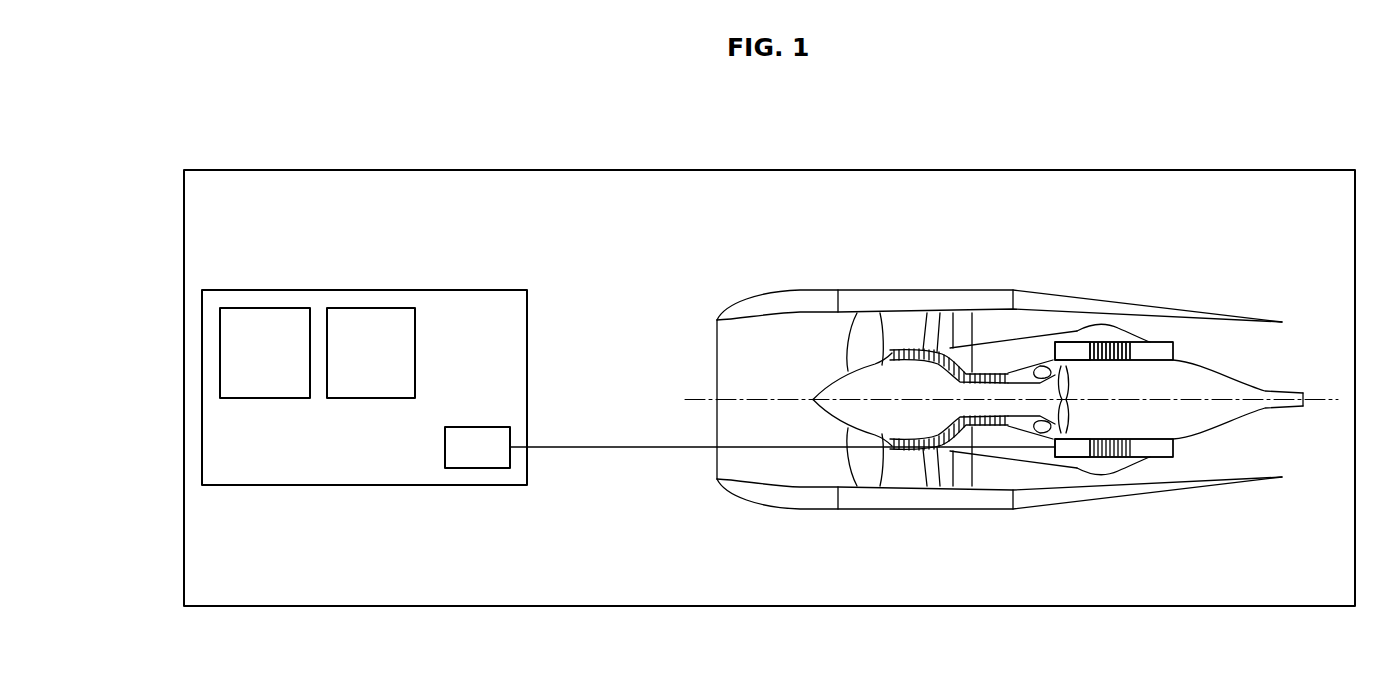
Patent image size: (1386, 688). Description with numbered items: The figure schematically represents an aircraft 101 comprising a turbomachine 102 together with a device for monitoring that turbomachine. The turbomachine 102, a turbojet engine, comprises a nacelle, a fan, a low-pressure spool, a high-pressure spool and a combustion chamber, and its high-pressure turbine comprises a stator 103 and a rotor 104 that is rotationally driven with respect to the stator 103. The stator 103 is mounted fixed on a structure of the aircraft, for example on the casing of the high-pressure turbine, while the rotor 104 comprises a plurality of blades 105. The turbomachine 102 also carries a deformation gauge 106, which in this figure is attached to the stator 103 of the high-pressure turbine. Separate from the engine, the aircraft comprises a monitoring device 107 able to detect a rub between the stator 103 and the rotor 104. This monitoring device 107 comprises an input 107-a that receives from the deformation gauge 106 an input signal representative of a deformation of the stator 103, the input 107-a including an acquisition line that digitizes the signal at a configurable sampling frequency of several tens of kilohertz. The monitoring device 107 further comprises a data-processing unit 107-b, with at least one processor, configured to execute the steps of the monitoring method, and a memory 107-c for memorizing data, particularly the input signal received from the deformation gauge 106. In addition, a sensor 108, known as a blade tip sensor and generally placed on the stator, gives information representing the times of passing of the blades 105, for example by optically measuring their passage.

The aircraft 101 is at (770, 170).
The turbomachine 102 is at (967, 545).
The stator 103 is at (1082, 341).
The rotor 104 is at (1097, 380).
The blades 105 is at (1082, 456).
The deformation gauge 106 is at (1067, 460).
The monitoring device 107 is at (363, 290).
The input 107-a is at (502, 457).
The data-processing unit 107-b is at (396, 363).
The memory 107-c is at (290, 363).
The sensor 108 is at (1072, 343).